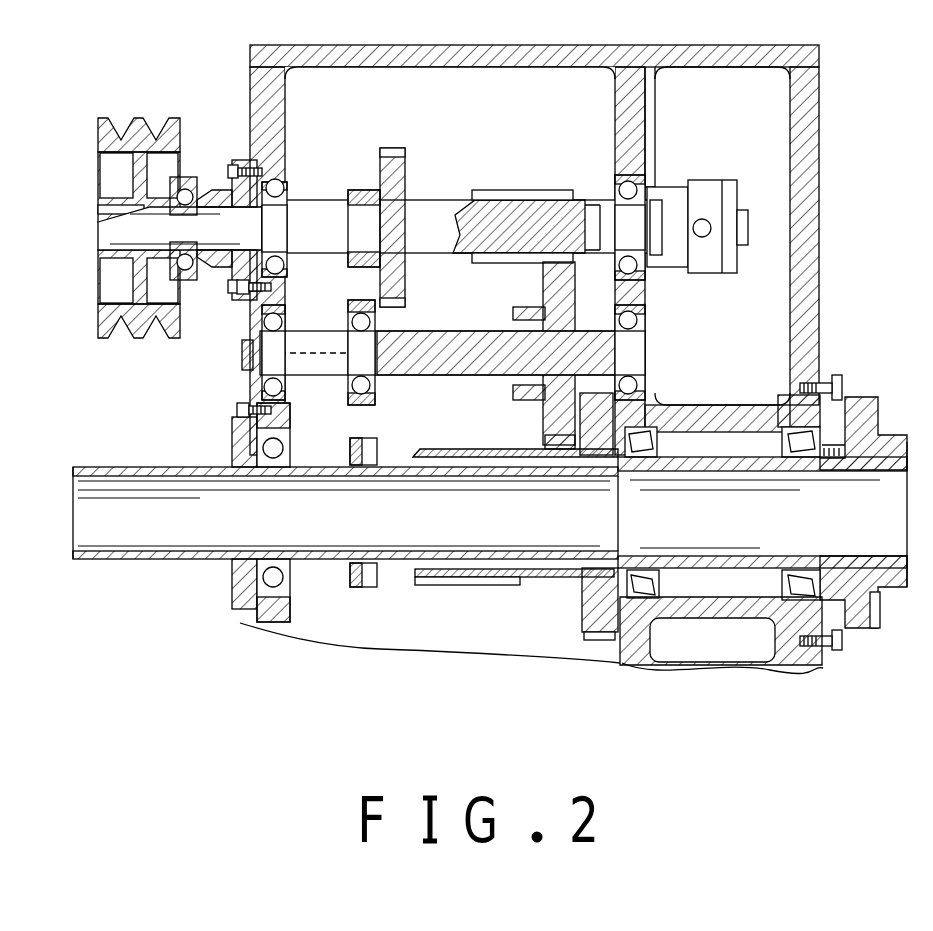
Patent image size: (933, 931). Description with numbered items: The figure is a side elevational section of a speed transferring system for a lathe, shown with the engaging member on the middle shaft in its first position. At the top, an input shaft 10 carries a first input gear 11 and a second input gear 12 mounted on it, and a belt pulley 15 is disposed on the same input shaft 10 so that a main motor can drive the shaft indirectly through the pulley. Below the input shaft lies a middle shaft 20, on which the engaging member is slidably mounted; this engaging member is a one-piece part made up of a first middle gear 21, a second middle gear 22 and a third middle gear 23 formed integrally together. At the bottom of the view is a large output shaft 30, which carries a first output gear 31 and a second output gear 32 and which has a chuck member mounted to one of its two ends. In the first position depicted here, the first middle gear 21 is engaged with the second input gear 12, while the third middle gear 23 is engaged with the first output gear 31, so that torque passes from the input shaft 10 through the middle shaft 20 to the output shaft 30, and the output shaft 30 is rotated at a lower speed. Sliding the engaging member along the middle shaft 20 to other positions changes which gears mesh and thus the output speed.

The input shaft 10 is at (315, 208).
The first input gear 11 is at (388, 157).
The second input gear 12 is at (492, 195).
The belt pulley 15 is at (128, 128).
The middle shaft 20 is at (308, 358).
The first middle gear 21 is at (573, 278).
The second middle gear 22 is at (522, 313).
The third middle gear 23 is at (602, 298).
The output shaft 30 is at (318, 560).
The first output gear 31 is at (584, 618).
The second output gear 32 is at (462, 585).